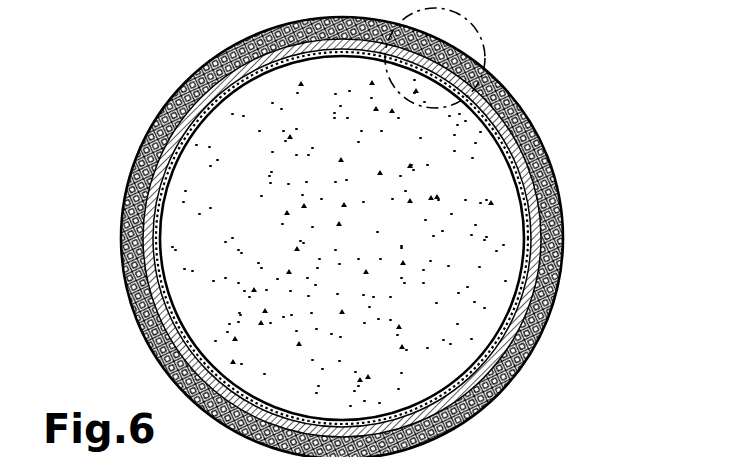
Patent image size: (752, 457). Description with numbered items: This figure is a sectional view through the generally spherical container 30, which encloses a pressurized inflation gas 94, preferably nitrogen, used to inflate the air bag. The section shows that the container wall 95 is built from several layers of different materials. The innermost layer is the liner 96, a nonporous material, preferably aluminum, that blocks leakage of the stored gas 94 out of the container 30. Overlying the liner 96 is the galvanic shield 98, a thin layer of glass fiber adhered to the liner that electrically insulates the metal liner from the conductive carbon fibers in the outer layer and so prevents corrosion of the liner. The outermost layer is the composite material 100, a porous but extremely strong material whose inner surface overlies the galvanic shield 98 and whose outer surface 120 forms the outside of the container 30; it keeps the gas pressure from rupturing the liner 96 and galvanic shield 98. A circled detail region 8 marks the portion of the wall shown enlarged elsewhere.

The container 30 is at (118, 151).
The outer surface 120 is at (209, 63).
The liner 96 is at (553, 281).
The container wall 95 is at (128, 312).
The galvanic shield 98 is at (528, 173).
The composite material 100 is at (513, 125).
The gas 94 is at (185, 218).
The detail region of FIG. 8 is at (435, 58).